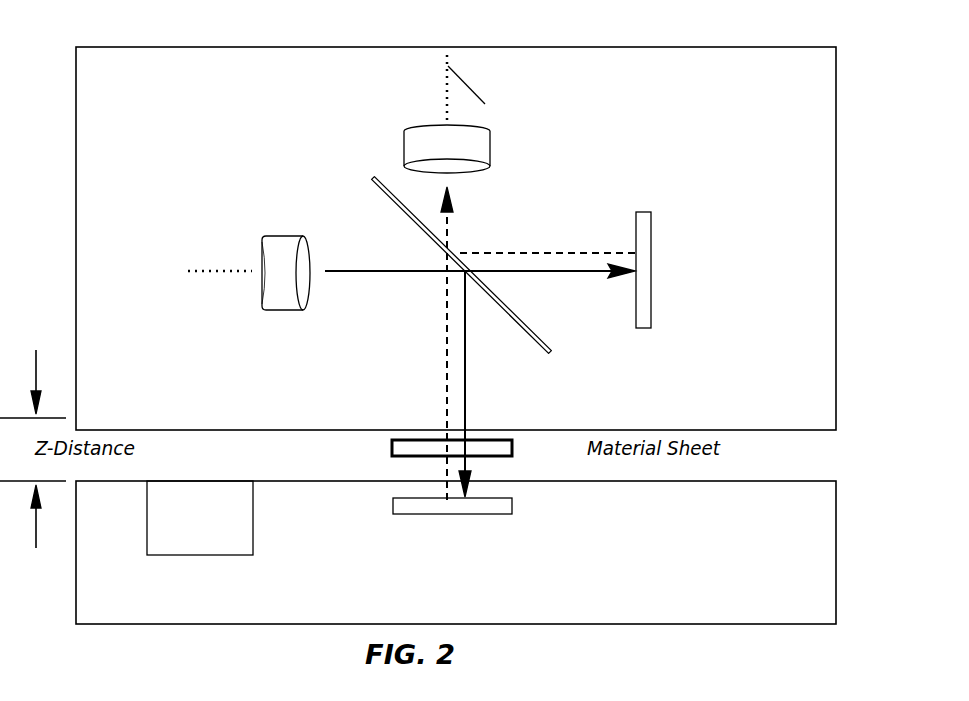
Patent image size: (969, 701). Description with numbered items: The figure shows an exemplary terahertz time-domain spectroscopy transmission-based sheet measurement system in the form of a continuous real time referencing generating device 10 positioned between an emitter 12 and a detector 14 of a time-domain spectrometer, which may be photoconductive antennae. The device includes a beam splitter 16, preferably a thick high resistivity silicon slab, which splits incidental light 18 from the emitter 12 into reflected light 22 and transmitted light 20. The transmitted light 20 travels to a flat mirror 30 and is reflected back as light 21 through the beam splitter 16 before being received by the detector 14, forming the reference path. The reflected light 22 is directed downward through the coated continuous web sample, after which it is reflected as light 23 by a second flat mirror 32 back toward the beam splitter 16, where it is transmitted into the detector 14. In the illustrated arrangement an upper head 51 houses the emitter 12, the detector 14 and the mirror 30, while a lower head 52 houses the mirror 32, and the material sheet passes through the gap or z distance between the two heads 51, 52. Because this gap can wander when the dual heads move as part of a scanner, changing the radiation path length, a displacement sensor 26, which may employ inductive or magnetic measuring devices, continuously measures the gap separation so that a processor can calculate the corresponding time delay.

The continuous real time referencing generating device 10 is at (58, 218).
The emitter 12 is at (260, 286).
The detector 14 is at (490, 157).
The beam splitter 16 is at (550, 353).
The incidental light 18 is at (389, 272).
The transmitted light 20 is at (522, 272).
The reflected light from mirror 30 21 is at (520, 252).
The reflected light 22 is at (465, 380).
The reflected light from mirror 32 23 is at (447, 372).
The displacement sensor 26 is at (253, 538).
The flat mirror 30 is at (651, 260).
The flat mirror 32 is at (477, 514).
The upper head 51 is at (836, 143).
The lower head 52 is at (836, 483).